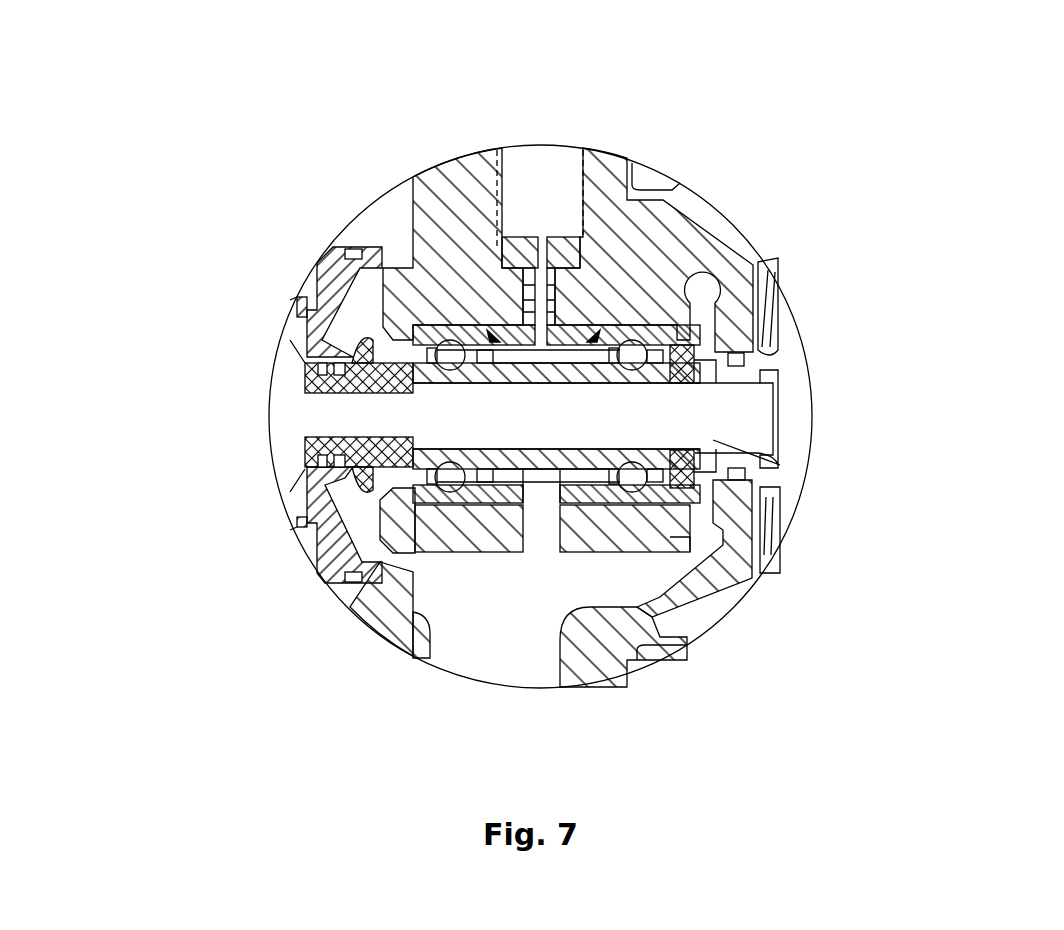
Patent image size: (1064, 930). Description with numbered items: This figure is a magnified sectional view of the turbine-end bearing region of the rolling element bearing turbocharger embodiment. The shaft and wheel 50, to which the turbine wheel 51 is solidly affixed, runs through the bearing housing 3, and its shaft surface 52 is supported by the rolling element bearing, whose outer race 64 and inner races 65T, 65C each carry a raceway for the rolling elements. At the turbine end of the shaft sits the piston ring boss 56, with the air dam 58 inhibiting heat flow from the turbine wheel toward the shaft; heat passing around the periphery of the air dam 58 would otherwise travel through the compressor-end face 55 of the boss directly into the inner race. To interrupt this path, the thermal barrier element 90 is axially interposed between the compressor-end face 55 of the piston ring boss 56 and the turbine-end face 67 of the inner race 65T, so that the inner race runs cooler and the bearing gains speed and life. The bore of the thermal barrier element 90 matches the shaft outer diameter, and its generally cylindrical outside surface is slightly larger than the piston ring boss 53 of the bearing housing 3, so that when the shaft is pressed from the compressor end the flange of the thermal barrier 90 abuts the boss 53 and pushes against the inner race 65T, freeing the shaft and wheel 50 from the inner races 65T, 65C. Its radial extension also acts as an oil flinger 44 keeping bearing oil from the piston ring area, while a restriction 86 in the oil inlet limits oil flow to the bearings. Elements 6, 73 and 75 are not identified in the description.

The bearing housing 3 is at (647, 253).
The bearing 6 is at (380, 226).
The flinger 44 is at (355, 347).
The shaft and wheel 50 is at (522, 422).
The turbine wheel 51 is at (783, 358).
The shaft surface 52 is at (472, 385).
The piston ring boss of the bearing housing 53 is at (727, 343).
The compressor-end face of the piston ring boss 55 is at (700, 452).
The piston ring boss 56 is at (757, 470).
The air dam 58 is at (750, 392).
The outer race 64 is at (570, 490).
The inner race 65C is at (520, 452).
The inner race 65T is at (558, 450).
The turbine-end side face of the inner race 67 is at (668, 467).
The inner race 73 is at (505, 495).
The inner race 75 is at (470, 505).
The restriction 86 is at (560, 240).
The thermal barrier element 90 is at (758, 483).